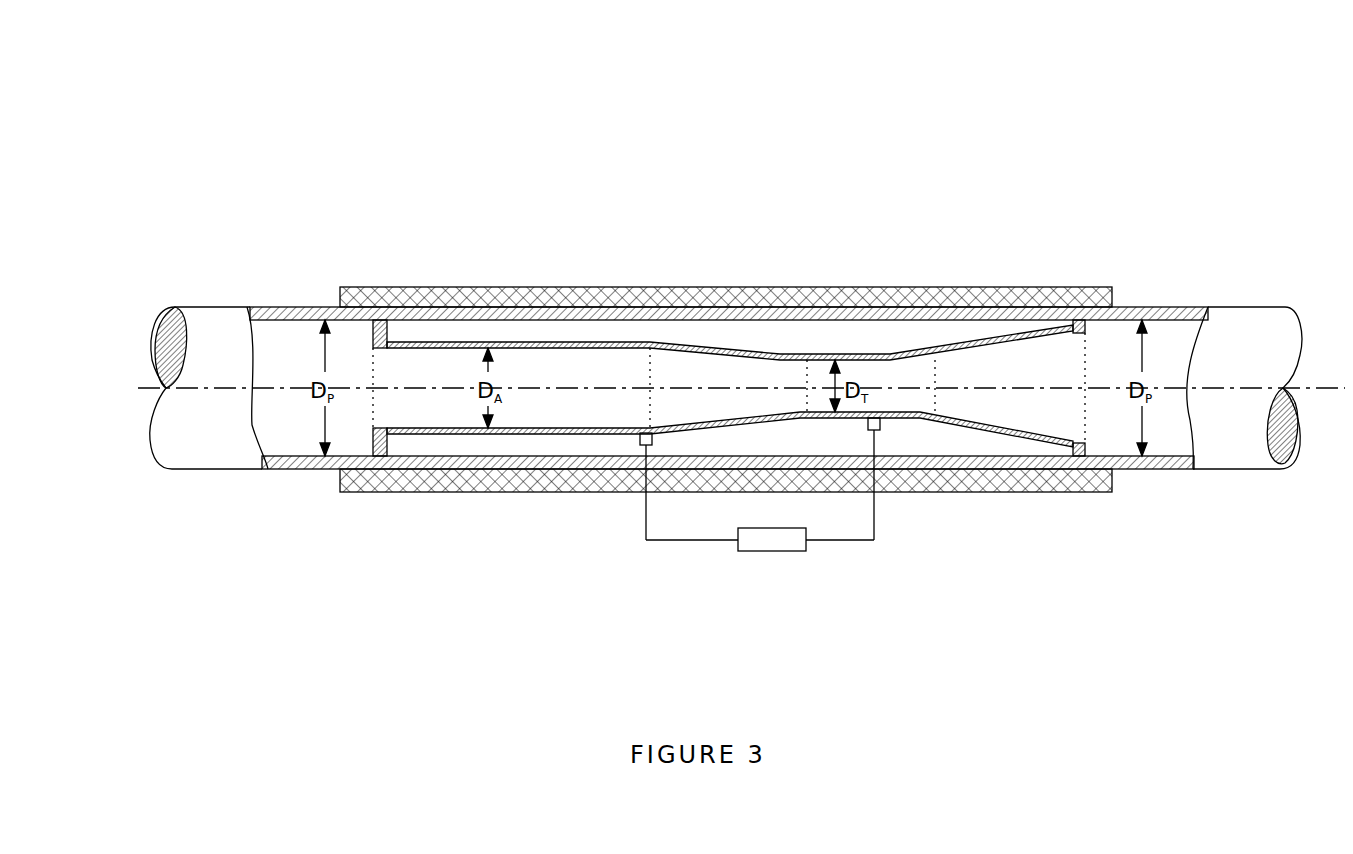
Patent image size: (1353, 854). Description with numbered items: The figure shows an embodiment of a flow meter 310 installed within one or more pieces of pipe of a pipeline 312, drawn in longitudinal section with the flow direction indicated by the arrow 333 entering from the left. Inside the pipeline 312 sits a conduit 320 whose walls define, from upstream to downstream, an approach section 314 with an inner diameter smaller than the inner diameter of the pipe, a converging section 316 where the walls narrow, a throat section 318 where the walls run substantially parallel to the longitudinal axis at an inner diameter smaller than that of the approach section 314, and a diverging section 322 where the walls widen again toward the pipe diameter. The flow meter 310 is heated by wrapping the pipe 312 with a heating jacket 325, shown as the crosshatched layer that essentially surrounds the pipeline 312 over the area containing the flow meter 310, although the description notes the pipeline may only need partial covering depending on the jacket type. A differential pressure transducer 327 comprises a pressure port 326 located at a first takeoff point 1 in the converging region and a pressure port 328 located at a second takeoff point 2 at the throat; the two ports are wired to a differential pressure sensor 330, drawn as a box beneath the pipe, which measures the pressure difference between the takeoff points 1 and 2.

The flow meter 310 is at (1050, 212).
The pipeline 312 is at (1173, 335).
The approach section 314 is at (465, 342).
The converging section 316 is at (770, 354).
The throat section 318 is at (895, 358).
The conduit 320 is at (683, 343).
The diverging section 322 is at (1040, 311).
The heating jacket 325 is at (383, 292).
The pressure port 326 is at (640, 446).
The differential pressure transducer 327 is at (686, 558).
The pressure port 328 is at (880, 431).
The differential pressure sensor 330 is at (778, 552).
The flow direction 333 is at (112, 390).
The pressure takeoff point 1 is at (641, 433).
The pressure takeoff point 2 is at (873, 418).